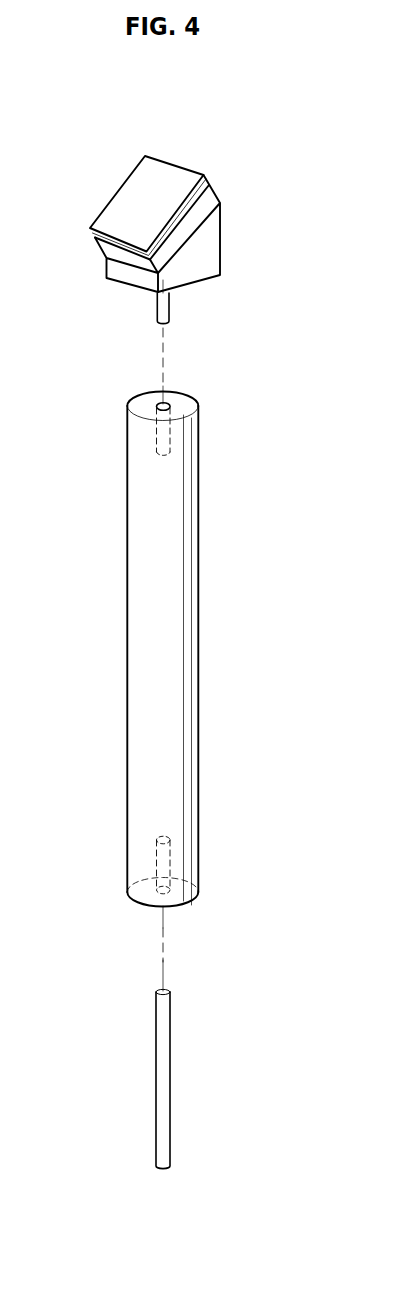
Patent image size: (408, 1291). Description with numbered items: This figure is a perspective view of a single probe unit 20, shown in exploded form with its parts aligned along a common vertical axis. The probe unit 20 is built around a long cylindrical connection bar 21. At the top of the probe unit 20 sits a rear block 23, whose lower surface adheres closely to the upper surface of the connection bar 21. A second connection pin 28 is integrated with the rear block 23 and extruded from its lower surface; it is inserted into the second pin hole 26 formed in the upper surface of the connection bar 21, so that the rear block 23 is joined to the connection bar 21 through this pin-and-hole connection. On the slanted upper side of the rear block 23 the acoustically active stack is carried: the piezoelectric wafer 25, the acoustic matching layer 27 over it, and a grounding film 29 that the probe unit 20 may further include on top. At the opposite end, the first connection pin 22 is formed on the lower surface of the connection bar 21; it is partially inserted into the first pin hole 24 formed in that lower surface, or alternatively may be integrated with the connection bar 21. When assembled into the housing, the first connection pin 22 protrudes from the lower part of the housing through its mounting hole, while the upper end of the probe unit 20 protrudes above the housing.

The probe unit 20 is at (191, 142).
The connection bar 21 is at (173, 633).
The first connection pin 22 is at (163, 1105).
The rear block 23 is at (208, 245).
The first pin hole 24 is at (170, 857).
The piezoelectric wafer 25 is at (205, 202).
The second pin hole 26 is at (157, 437).
The acoustic matching layer 27 is at (219, 200).
The second connection pin 28 is at (157, 308).
The grounding film 29 is at (135, 192).